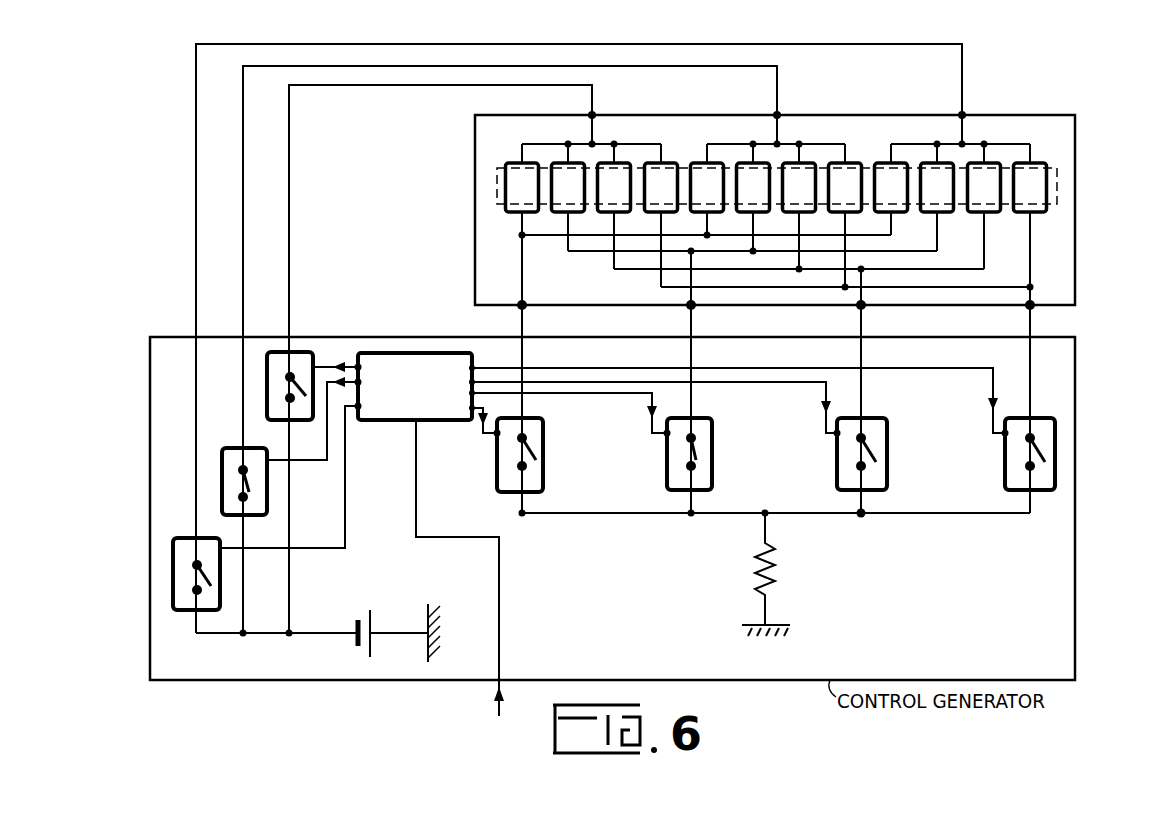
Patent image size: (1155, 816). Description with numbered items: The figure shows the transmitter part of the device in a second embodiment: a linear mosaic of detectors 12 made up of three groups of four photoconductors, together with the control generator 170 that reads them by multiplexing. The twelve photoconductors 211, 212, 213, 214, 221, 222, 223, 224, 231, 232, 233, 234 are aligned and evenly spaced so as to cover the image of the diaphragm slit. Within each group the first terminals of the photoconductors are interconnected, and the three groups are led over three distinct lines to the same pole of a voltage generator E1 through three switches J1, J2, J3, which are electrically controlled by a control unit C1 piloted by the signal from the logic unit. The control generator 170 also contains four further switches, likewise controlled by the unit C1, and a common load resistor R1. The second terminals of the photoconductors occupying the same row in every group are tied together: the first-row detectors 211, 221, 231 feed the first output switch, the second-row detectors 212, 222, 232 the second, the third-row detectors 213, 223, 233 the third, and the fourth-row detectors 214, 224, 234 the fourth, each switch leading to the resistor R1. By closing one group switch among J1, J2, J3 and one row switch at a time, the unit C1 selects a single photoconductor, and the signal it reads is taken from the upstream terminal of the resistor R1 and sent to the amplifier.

The linear mosaic of detectors 12 is at (475, 258).
The control generator 170 is at (384, 352).
The photoconductor 211 is at (512, 175).
The photoconductor 212 is at (557, 170).
The photoconductor 213 is at (615, 172).
The photoconductor 214 is at (660, 173).
The photoconductor 221 is at (700, 172).
The photoconductor 222 is at (745, 170).
The photoconductor 223 is at (790, 170).
The photoconductor 224 is at (847, 170).
The photoconductor 231 is at (883, 170).
The photoconductor 232 is at (928, 170).
The photoconductor 233 is at (978, 170).
The photoconductor 234 is at (1033, 175).
The switch J1 is at (310, 352).
The switch J2 is at (232, 457).
The switch J3 is at (183, 548).
The control unit C1 is at (386, 422).
The voltage generator E1 is at (360, 618).
The load resistor R1 is at (775, 567).